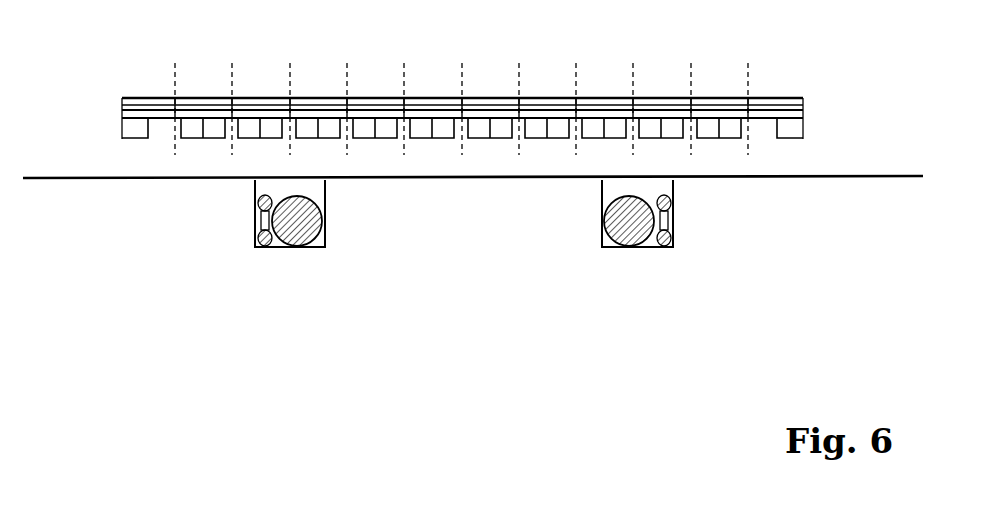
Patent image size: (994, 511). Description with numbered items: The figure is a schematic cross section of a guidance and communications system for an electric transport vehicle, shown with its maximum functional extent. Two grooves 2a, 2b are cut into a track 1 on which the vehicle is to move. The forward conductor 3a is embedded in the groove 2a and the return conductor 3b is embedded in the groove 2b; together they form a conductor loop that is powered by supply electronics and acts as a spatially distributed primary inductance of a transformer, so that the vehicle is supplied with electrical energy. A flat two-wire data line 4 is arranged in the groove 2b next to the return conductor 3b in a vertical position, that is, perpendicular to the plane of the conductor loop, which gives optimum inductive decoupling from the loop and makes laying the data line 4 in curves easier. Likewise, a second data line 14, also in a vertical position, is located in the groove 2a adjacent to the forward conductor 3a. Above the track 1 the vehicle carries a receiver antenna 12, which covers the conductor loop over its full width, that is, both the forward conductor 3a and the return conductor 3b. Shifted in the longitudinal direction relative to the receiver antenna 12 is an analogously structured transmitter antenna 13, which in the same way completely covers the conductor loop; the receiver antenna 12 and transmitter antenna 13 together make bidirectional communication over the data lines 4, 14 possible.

The track 1 is at (103, 203).
The receiver antenna 12 is at (510, 109).
The transmitter antenna 13 is at (807, 155).
The groove 2a is at (254, 187).
The groove 2b is at (604, 186).
The forward conductor 3a is at (305, 249).
The return conductor 3b is at (620, 248).
The second data line 14 is at (262, 268).
The data line 4 is at (662, 268).